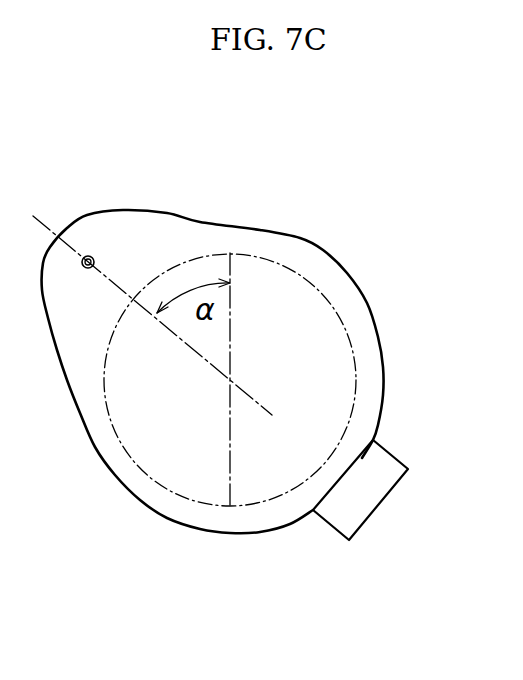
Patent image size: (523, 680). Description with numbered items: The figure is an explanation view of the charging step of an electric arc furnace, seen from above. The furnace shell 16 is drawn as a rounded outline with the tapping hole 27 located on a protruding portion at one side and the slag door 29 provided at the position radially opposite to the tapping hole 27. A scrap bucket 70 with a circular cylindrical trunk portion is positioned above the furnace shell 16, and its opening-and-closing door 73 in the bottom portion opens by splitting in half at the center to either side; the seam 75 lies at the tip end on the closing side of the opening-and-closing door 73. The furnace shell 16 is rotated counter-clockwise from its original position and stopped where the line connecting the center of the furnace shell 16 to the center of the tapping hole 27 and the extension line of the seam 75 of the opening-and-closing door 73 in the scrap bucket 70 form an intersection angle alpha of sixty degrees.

The furnace shell 16 is at (326, 249).
The tapping hole 27 is at (89, 256).
The slag door 29 is at (332, 493).
The scrap bucket 70 is at (348, 337).
The opening-and-closing door 73 is at (333, 375).
The seam 75 is at (232, 308).